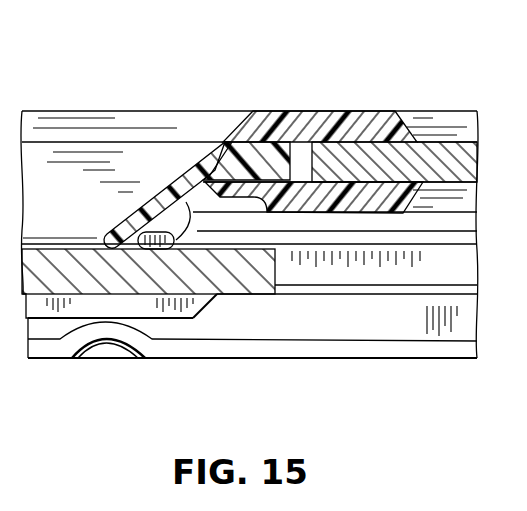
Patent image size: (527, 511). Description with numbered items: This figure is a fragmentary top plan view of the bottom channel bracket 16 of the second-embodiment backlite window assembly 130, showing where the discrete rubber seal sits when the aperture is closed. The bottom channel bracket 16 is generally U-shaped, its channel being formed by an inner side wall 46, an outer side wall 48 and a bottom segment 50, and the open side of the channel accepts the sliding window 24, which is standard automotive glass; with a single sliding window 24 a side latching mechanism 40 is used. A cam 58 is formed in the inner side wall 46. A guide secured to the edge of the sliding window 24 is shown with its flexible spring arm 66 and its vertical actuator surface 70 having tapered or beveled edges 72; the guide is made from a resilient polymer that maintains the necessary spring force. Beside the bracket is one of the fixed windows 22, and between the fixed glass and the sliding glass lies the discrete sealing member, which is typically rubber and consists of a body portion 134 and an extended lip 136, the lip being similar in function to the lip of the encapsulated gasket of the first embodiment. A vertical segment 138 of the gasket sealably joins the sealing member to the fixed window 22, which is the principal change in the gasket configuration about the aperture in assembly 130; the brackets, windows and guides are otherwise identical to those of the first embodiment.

The bottom channel bracket 16 is at (377, 361).
The fixed window 22 is at (453, 155).
The sliding window 24 is at (263, 280).
The side latching mechanism 40 is at (519, 118).
The inner side wall 46 is at (458, 352).
The outer side wall 48 is at (470, 222).
The bottom segment 50 is at (463, 320).
The cam 58 is at (103, 334).
The flexible spring arm 66 is at (133, 221).
The vertical actuator surface 70 is at (157, 310).
The beveled edge 72 is at (208, 308).
The assembly 130 is at (424, 89).
The body portion 134 is at (253, 157).
The extended lip 136 is at (131, 220).
The vertical segment 138 is at (340, 128).